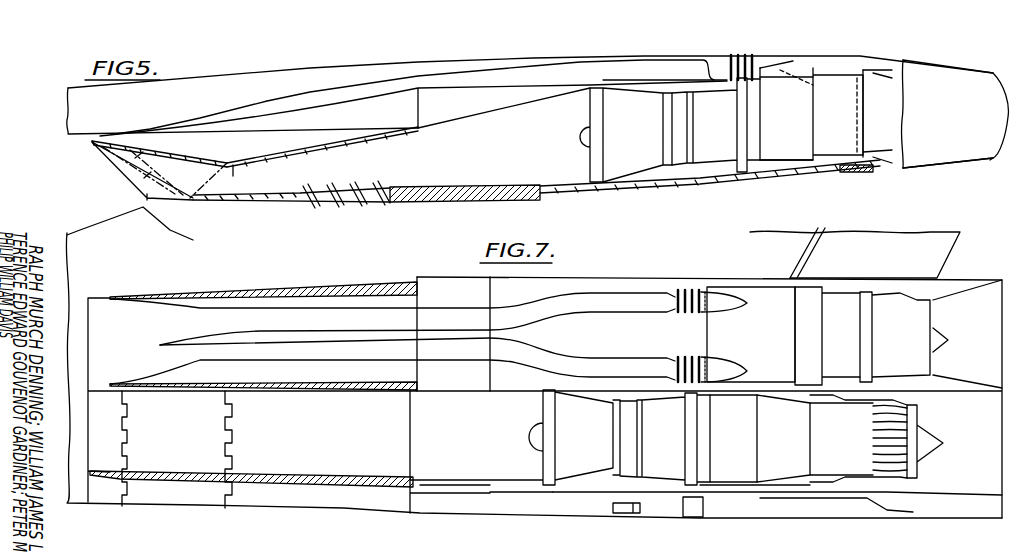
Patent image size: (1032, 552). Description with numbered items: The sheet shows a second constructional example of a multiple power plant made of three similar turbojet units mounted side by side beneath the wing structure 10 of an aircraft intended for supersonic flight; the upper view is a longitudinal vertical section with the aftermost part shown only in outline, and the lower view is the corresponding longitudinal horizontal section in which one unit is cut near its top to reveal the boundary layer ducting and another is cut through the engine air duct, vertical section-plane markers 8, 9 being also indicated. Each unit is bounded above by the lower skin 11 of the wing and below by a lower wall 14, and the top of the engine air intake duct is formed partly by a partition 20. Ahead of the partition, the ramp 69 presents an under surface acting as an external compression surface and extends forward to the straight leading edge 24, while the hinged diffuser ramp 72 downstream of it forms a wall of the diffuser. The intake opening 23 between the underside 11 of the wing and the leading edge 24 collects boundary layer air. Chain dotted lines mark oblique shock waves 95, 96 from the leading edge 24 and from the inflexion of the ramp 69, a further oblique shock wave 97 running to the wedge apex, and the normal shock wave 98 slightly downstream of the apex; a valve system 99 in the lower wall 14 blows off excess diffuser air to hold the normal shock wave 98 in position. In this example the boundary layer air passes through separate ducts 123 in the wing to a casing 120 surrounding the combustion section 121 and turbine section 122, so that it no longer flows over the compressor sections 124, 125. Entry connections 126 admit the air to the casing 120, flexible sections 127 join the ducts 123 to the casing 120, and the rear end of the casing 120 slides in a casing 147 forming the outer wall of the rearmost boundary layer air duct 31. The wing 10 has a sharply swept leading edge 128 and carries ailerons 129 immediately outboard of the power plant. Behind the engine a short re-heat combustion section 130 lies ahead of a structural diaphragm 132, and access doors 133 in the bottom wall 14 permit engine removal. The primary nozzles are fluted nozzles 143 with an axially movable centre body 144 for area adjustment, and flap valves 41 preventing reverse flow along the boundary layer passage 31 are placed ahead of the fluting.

In FIG. 5, the section line 8- 8 is at (223, 250).
In FIG. 5, the section line 9- 9 is at (533, 233).
In FIG. 5, the wing structure 10 is at (343, 73).
In FIG. 7, the wing structure 10 is at (160, 281).
In FIG. 5, the lower skin of the wing structure 11 is at (918, 20).
In FIG. 5, the lower wall 14 is at (463, 193).
In FIG. 5, the partition 20 is at (517, 102).
In FIG. 5, the intake opening 23 is at (92, 142).
In FIG. 5, the leading edge 24 is at (93, 145).
In FIG. 5, the boundary layer air duct 31 is at (865, 78).
In FIG. 7, the flap valves 41 is at (867, 400).
In FIG. 5, the ramp 69 is at (157, 155).
In FIG. 5, the ramp 72 is at (325, 147).
In FIG. 5, the oblique shock wave 95 is at (148, 195).
In FIG. 5, the oblique shock wave 96 is at (132, 170).
In FIG. 5, the oblique shock wave 97 is at (207, 170).
In FIG. 5, the normal shock wave 98 is at (248, 177).
In FIG. 5, the valve system 99 is at (330, 202).
In FIG. 5, the casing 120 is at (830, 65).
In FIG. 7, the casing 120 is at (758, 292).
In FIG. 5, the combustion section 121 is at (797, 158).
In FIG. 5, the turbine section 122 is at (847, 160).
In FIG. 5, the ducts 123 is at (400, 80).
In FIG. 7, the ducts 123 is at (323, 348).
In FIG. 5, the compressor section 124 is at (645, 136).
In FIG. 7, the compressor section 124 is at (597, 450).
In FIG. 5, the compressor section 125 is at (732, 136).
In FIG. 7, the compressor section 125 is at (670, 450).
In FIG. 5, the entry connections 126 is at (782, 63).
In FIG. 7, the entry connections 126 is at (700, 363).
In FIG. 5, the flexible sections 127 is at (733, 57).
In FIG. 7, the flexible sections 127 is at (680, 360).
In FIG. 5, the leading edge 128 is at (88, 228).
In FIG. 7, the ailerons 129 is at (873, 267).
In FIG. 5, the re-heat combustion section 130 is at (902, 134).
In FIG. 7, the re-heat combustion section 130 is at (858, 463).
In FIG. 5, the structural diaphragm 132 is at (922, 62).
In FIG. 5, the access doors 133 is at (717, 180).
In FIG. 7, the fluted nozzles 143 is at (913, 417).
In FIG. 7, the centre body 144 is at (948, 432).
In FIG. 5, the casing 147 is at (868, 65).
In FIG. 7, the casing 147 is at (837, 303).